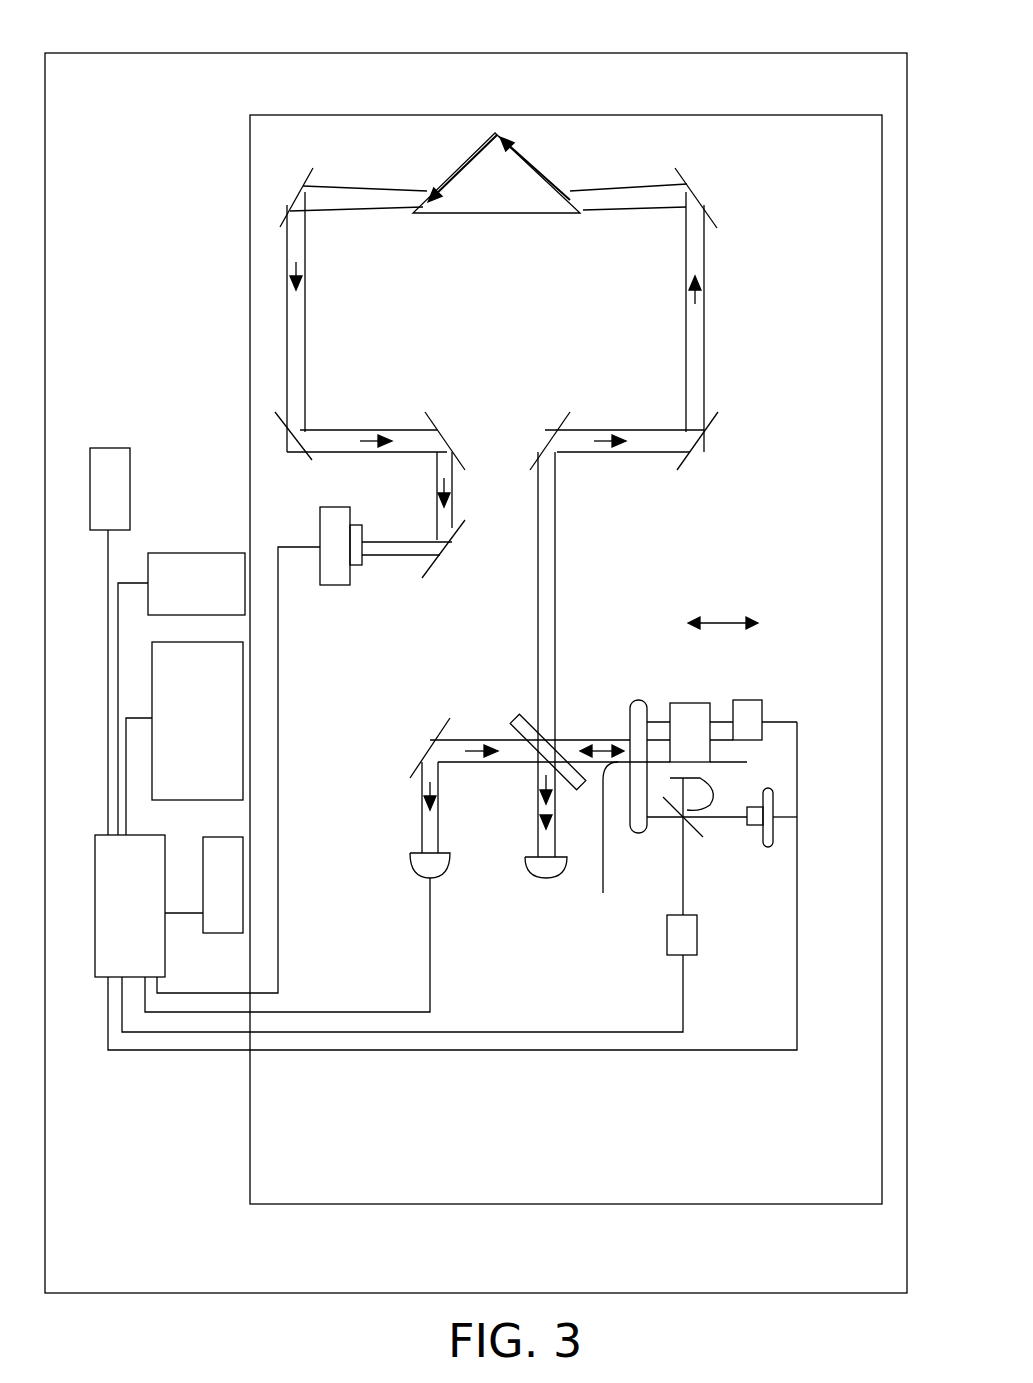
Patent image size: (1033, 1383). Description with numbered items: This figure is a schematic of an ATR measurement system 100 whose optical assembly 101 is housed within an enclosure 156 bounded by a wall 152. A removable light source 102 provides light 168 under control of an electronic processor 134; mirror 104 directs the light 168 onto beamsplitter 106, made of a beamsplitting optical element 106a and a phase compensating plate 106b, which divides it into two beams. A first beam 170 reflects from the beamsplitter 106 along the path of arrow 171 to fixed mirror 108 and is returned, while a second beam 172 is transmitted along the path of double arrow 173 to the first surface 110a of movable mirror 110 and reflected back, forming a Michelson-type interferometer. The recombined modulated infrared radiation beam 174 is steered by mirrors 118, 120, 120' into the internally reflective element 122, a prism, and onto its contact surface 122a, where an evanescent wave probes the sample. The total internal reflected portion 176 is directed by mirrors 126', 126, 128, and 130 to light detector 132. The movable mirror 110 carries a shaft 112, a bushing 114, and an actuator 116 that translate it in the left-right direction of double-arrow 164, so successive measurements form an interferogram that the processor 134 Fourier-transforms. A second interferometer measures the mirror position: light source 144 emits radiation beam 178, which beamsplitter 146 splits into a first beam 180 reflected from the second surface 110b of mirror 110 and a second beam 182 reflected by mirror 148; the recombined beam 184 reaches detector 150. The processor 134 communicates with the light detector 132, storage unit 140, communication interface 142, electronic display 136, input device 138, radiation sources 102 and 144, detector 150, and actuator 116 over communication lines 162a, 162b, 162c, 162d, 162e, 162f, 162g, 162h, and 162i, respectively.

The ATR measurement system 100 is at (738, 46).
The optical assembly 101 is at (782, 338).
The radiation source 102 is at (417, 873).
The mirror 104 is at (418, 768).
The beamsplitter 106 is at (582, 775).
The beamsplitting optical element 106a is at (525, 718).
The phase compensating plate 106b is at (513, 728).
The fixed mirror 108 is at (530, 865).
The movable mirror 110 is at (618, 700).
The first surface of movable mirror 110a is at (615, 800).
The second surface of movable mirror 110b is at (603, 893).
The shaft 112 is at (658, 718).
The bushing 114 is at (683, 703).
The actuator 116 is at (747, 700).
The mirror 118 is at (550, 442).
The mirror 120 is at (721, 441).
The mirror 120' is at (733, 187).
The internally reflective element 122 is at (483, 226).
The contact surface 122a is at (497, 133).
The mirror 126 is at (258, 428).
The mirror 126' is at (250, 189).
The mirror 128 is at (443, 440).
The mirror 130 is at (452, 545).
The light detector 132 is at (335, 585).
The electronic processor 134 is at (130, 906).
The electronic display 136 is at (197, 721).
The input device 138 is at (243, 875).
The storage unit 140 is at (196, 584).
The communication interface 142 is at (130, 470).
The light source 144 is at (667, 928).
The beamsplitter 146 is at (688, 850).
The mirror 148 is at (751, 763).
The detector 150 is at (772, 848).
The housing wall 152 is at (818, 477).
The enclosure 156 is at (894, 548).
The communication line 162a is at (282, 722).
The communication line 162b is at (137, 583).
The communication line 162c is at (105, 642).
The communication line 162d is at (127, 777).
The communication line 162e is at (173, 915).
The communication line 162f is at (317, 1010).
The communication line 162g is at (466, 1032).
The communication line 162h is at (780, 818).
The communication line 162i is at (797, 762).
The double-arrow 164 is at (730, 618).
The light 168 is at (518, 765).
The first beam 170 is at (537, 838).
The arrow 171 is at (543, 812).
The second beam 172 is at (560, 690).
The double arrow 173 is at (600, 735).
The modulated infrared radiation beam 174 is at (585, 188).
The total internal reflected portion 176 is at (398, 187).
The radiation beam 178 is at (683, 900).
The first beam 180 is at (667, 845).
The second beam 182 is at (700, 778).
The combined beam 184 is at (722, 823).